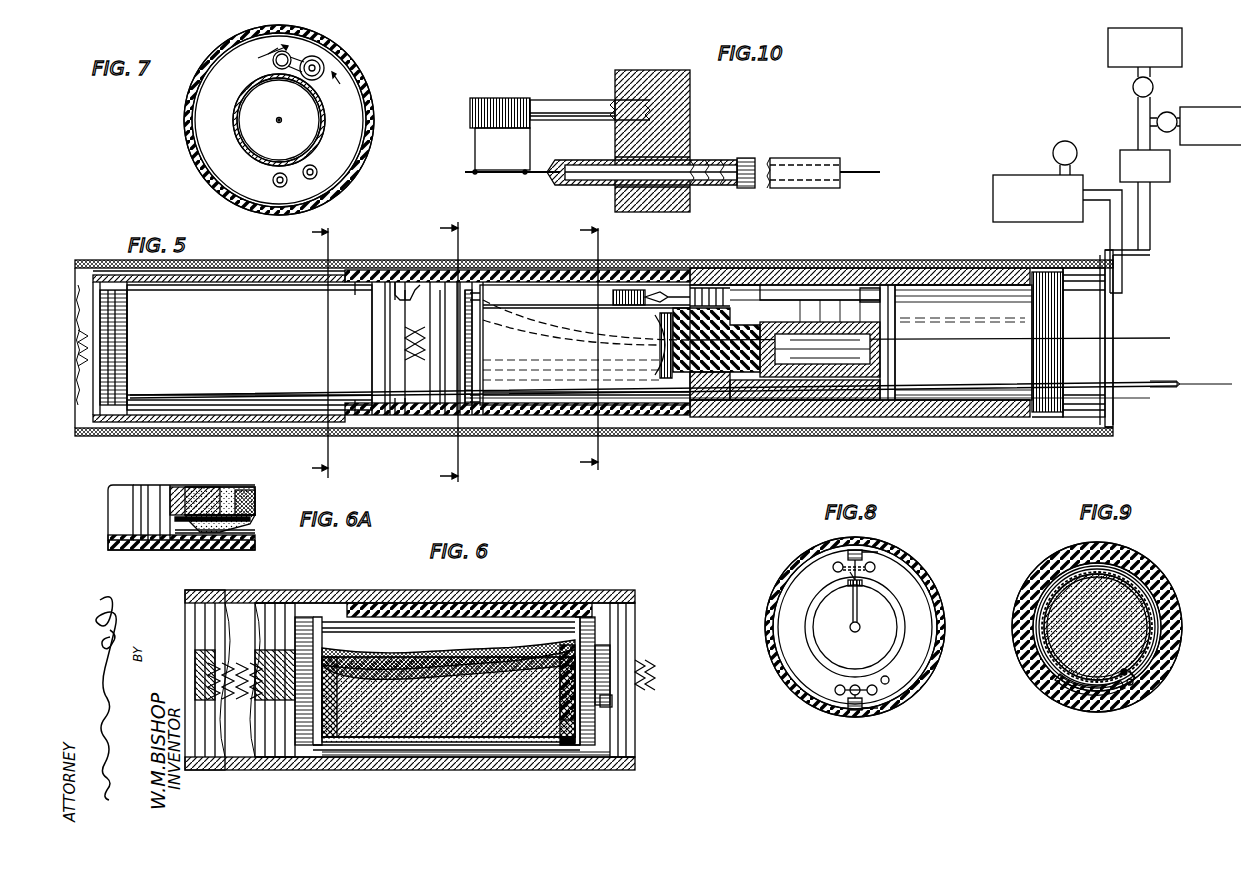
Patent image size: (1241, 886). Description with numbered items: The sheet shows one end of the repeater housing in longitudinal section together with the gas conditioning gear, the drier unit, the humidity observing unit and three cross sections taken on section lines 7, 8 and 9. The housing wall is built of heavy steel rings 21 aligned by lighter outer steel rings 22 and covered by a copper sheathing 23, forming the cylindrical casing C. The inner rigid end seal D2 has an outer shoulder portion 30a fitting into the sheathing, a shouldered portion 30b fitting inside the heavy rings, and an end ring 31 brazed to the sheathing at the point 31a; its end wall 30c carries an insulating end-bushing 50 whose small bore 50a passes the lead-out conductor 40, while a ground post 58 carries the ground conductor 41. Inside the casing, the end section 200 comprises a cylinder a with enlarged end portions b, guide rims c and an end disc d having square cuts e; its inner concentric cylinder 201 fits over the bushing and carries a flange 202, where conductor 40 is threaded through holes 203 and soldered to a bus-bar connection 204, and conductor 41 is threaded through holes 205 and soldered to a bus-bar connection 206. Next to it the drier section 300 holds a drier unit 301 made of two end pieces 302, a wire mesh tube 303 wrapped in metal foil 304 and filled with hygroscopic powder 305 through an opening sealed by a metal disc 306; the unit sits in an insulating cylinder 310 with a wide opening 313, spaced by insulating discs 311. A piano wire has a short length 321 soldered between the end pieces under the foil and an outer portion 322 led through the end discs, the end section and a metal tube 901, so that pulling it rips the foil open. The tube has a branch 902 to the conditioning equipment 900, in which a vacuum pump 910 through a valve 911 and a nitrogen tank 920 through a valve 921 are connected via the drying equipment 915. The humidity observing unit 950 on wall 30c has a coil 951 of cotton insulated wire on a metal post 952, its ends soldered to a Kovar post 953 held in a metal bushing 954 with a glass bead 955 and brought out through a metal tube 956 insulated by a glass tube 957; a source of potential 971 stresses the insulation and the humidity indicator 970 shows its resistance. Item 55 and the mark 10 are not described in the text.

In FIG. 7, the end section 200 is at (362, 86).
In FIG. 5, the end section 200 is at (552, 296).
In FIG. 7, the inner concentric cylinder 201 is at (322, 120).
In FIG. 5, the inner concentric cylinder 201 is at (565, 370).
In FIG. 8, the inner concentric cylinder 201 is at (805, 627).
In FIG. 5, the flange 202 is at (478, 425).
In FIG. 8, the flange 202 is at (790, 590).
In FIG. 5, the set of holes 203 is at (478, 290).
In FIG. 8, the set of holes 203 is at (845, 575).
In FIG. 5, the bus-bar connection 204 is at (78, 262).
In FIG. 6, the bus-bar connection 204 is at (255, 615).
In FIG. 8, the bus-bar connection 204 is at (855, 550).
In FIG. 9, the bus-bar connection 204 is at (1100, 545).
In FIG. 5, the set of holes 205 is at (500, 428).
In FIG. 8, the set of holes 205 is at (840, 690).
In FIG. 5, the bus-bar connection 206 is at (88, 428).
In FIG. 6, the bus-bar connection 206 is at (245, 757).
In FIG. 8, the bus-bar connection 206 is at (855, 712).
In FIG. 9, the bus-bar connection 206 is at (1100, 700).
In FIG. 5, the drier section 300 is at (276, 298).
In FIG. 6, the drier section 300 is at (383, 592).
In FIG. 6A, the drier unit 301 is at (188, 490).
In FIG. 6, the drier unit 301 is at (505, 635).
In FIG. 9, the drier unit 301 is at (1140, 588).
In FIG. 6, the end pieces 302 is at (335, 745).
In FIG. 6A, the wire mesh tube 303 is at (190, 533).
In FIG. 6, the wire mesh tube 303 is at (420, 677).
In FIG. 9, the wire mesh tube 303 is at (1152, 607).
In FIG. 6A, the metal foil wrapping 304 is at (240, 522).
In FIG. 6, the metal foil wrapping 304 is at (470, 700).
In FIG. 9, the metal foil wrapping 304 is at (1155, 622).
In FIG. 6A, the hygroscopic powder 305 is at (238, 490).
In FIG. 6, the hygroscopic powder 305 is at (362, 725).
In FIG. 9, the hygroscopic powder 305 is at (1150, 600).
In FIG. 6, the soldered metal disc 306 is at (575, 660).
In FIG. 6, the insulating cylinder 310 is at (440, 610).
In FIG. 9, the insulating cylinder 310 is at (1052, 685).
In FIG. 6, the insulating discs 311 is at (305, 640).
In FIG. 6A, the wide opening 313 is at (150, 533).
In FIG. 6, the wide opening 313 is at (508, 750).
In FIG. 9, the wide opening 313 is at (1140, 690).
In FIG. 6A, the short wire length 321 is at (252, 508).
In FIG. 6, the short wire length 321 is at (580, 745).
In FIG. 9, the short wire length 321 is at (1128, 685).
In FIG. 7, the outer wire portion 322 is at (318, 174).
In FIG. 5, the outer wire portion 322 is at (392, 425).
In FIG. 6A, the outer wire portion 322 is at (255, 535).
In FIG. 6, the outer wire portion 322 is at (610, 745).
In FIG. 8, the outer wire portion 322 is at (890, 680).
In FIG. 9, the outer wire portion 322 is at (1134, 682).
In FIG. 7, the lead-out conductor 40 is at (278, 122).
In FIG. 5, the lead-out conductor 40 is at (662, 330).
In FIG. 8, the lead-out conductor 40 is at (856, 608).
In FIG. 7, the ground conductor 41 is at (273, 180).
In FIG. 5, the ground conductor 41 is at (660, 398).
In FIG. 7, the end-bushing 50 is at (305, 135).
In FIG. 5, the end-bushing 50 is at (662, 360).
In FIG. 7, the small bore 50a is at (276, 120).
In FIG. 5, the connector block 55 is at (884, 340).
In FIG. 5, the ground post 58 is at (800, 415).
In FIG. 5, the heavy steel rings 21 is at (948, 417).
In FIG. 5, the outer steel rings 22 is at (982, 418).
In FIG. 5, the copper sheathing 23 is at (1070, 420).
In FIG. 5, the outer shoulder portion 30a is at (1035, 420).
In FIG. 5, the shouldered portion 30b is at (900, 415).
In FIG. 7, the end wall 30c is at (352, 137).
In FIG. 10, the end wall 30c is at (690, 88).
In FIG. 5, the end wall 30c is at (718, 420).
In FIG. 5, the end ring 31 is at (1105, 425).
In FIG. 5, the brazing point 31a is at (1114, 420).
In FIG. 5, the conditioning equipment 900 is at (1136, 158).
In FIG. 5, the metal tube 901 is at (1172, 378).
In FIG. 5, the branch pipe 902 is at (1150, 232).
In FIG. 5, the vacuum pump 910 is at (1108, 45).
In FIG. 5, the valve 911 is at (1133, 87).
In FIG. 5, the drying equipment 915 is at (1170, 172).
In FIG. 5, the nitrogen tank 920 is at (1228, 107).
In FIG. 5, the valve 921 is at (1170, 112).
In FIG. 7, the humidity observing unit 950 is at (292, 52).
In FIG. 10, the humidity observing unit 950 is at (556, 98).
In FIG. 5, the humidity observing unit 950 is at (625, 290).
In FIG. 7, the coil 951 is at (270, 58).
In FIG. 10, the coil 951 is at (505, 98).
In FIG. 7, the metal post 952 is at (300, 60).
In FIG. 10, the metal post 952 is at (580, 100).
In FIG. 7, the Kovar post 953 is at (318, 68).
In FIG. 10, the Kovar post 953 is at (490, 176).
In FIG. 5, the Kovar post 953 is at (885, 295).
In FIG. 10, the metal bushing 954 is at (592, 163).
In FIG. 10, the glass bead 955 is at (558, 162).
In FIG. 10, the metal tube 956 is at (752, 160).
In FIG. 10, the glass tube 957 is at (848, 166).
In FIG. 5, the humidity indicator 970 is at (1000, 175).
In FIG. 5, the source of potential 971 is at (1053, 150).
In FIG. 7, the view direction 10 is at (295, 70).
In FIG. 5, the section line 7— 7 is at (589, 343).
In FIG. 5, the section line 8— 8 is at (446, 350).
In FIG. 5, the section line 9— 9 is at (318, 353).
In FIG. 7, the cylinder a is at (366, 102).
In FIG. 5, the cylinder a is at (218, 432).
In FIG. 6, the cylinder a is at (385, 771).
In FIG. 8, the cylinder a is at (782, 680).
In FIG. 9, the cylinder a is at (1025, 672).
In FIG. 5, the enlarged end portions b is at (138, 425).
In FIG. 5, the rim portion c is at (105, 430).
In FIG. 6, the rim portion c is at (265, 765).
In FIG. 5, the end disc d is at (118, 430).
In FIG. 6, the end disc d is at (288, 763).
In FIG. 6, the square cuts e is at (612, 705).
In FIG. 8, the square cuts e is at (880, 553).
In FIG. 5, the cylindrical casing C is at (226, 262).
In FIG. 5, the inner rigid end seal D2 is at (830, 280).